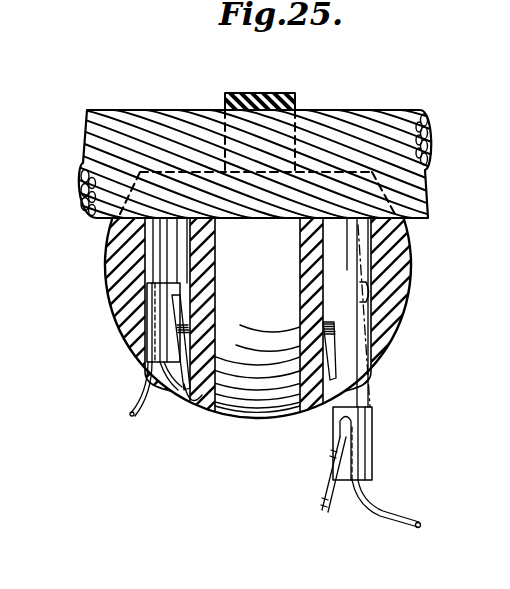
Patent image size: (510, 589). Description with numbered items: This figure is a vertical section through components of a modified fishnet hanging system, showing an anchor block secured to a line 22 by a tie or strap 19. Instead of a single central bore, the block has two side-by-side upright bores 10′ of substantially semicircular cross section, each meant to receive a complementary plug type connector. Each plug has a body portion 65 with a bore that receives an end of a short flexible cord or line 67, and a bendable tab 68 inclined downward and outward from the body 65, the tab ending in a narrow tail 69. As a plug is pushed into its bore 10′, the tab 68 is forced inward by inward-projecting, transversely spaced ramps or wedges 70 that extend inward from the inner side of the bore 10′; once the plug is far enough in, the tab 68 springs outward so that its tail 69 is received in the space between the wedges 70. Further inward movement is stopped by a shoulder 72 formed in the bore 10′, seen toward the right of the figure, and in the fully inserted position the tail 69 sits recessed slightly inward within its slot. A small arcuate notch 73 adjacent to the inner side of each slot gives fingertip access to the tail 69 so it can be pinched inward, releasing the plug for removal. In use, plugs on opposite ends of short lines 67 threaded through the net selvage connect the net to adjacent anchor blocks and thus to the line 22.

The tie or strap 19 is at (270, 93).
The line 22 is at (376, 112).
The upright bore 10′ is at (337, 262).
The ramps or wedges 70 is at (300, 330).
The bendable tab 68 is at (333, 432).
The shoulder 72 is at (400, 300).
The arcuate notch 73 is at (195, 410).
The body portion 65 is at (358, 447).
The tail 69 is at (182, 380).
The flexible cord or line 67 is at (138, 394).